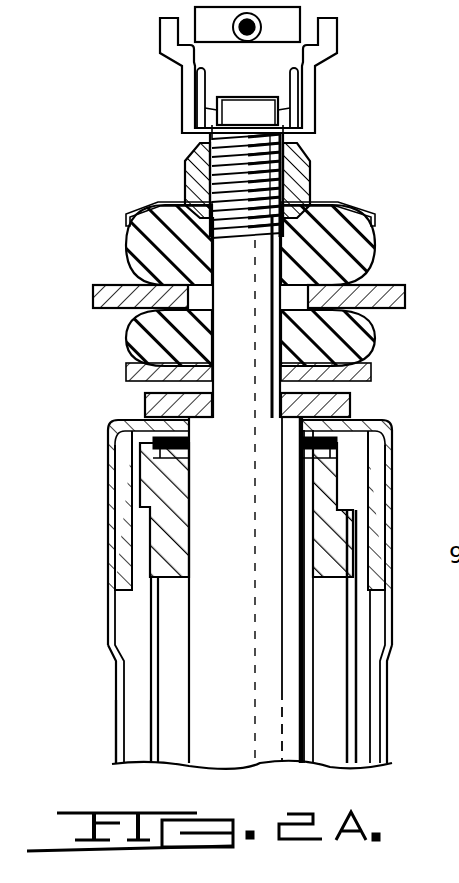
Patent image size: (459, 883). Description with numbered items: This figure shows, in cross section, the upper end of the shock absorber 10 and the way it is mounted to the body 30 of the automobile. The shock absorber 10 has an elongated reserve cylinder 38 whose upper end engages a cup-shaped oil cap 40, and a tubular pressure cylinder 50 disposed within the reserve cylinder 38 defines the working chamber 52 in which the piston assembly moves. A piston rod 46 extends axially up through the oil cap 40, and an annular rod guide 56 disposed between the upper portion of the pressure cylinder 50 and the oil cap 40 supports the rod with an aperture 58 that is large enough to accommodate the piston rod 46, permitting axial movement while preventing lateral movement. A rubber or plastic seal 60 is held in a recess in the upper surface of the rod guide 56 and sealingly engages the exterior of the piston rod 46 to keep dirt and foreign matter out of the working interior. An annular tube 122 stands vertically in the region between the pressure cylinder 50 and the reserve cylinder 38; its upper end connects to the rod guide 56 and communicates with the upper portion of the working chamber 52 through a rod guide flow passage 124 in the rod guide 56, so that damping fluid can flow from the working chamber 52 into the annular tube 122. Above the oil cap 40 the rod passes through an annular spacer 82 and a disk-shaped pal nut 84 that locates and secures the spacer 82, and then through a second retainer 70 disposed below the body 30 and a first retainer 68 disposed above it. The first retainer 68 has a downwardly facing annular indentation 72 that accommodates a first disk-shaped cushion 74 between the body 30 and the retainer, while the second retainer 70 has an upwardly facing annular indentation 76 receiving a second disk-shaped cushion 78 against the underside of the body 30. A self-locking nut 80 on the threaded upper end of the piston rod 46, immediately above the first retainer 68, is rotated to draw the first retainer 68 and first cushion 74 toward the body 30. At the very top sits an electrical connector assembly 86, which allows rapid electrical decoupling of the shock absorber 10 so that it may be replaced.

The shock absorber 10 is at (357, 88).
The electrical connector assembly 86 is at (183, 87).
The self-locking nut 80 is at (187, 162).
The aperture 58 is at (196, 545).
The first retainer 68 is at (126, 222).
The first disk-shaped cushion 74 is at (126, 250).
The downwardly facing annular indentation 72 is at (335, 203).
The body 30 is at (93, 297).
The second disk-shaped cushion 78 is at (126, 340).
The upwardly facing annular indentation 76 is at (363, 385).
The second retainer 70 is at (127, 372).
The annular spacer 82 is at (147, 405).
The pal nut 84 is at (350, 397).
The oil cap 40 is at (122, 577).
The rod guide 56 is at (160, 523).
The seal 60 is at (155, 445).
The rod guide flow passage 124 is at (367, 482).
The piston rod 46 is at (227, 642).
The working chamber 52 is at (168, 688).
The pressure cylinder 50 is at (148, 715).
The reserve cylinder 38 is at (115, 752).
The annular tube 122 is at (373, 685).